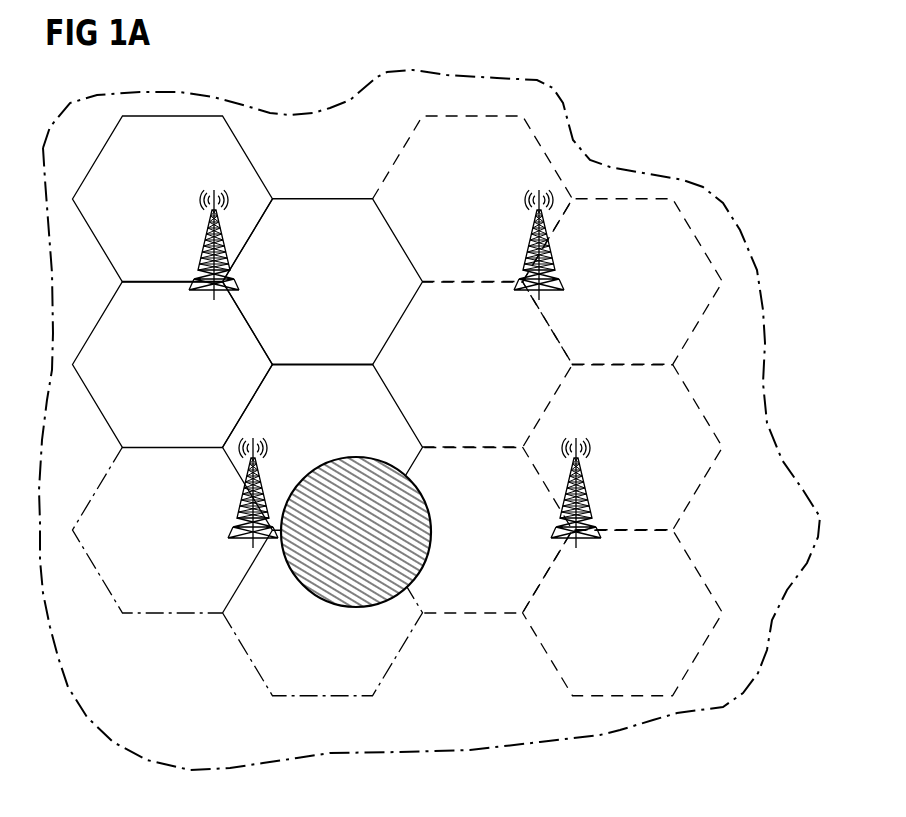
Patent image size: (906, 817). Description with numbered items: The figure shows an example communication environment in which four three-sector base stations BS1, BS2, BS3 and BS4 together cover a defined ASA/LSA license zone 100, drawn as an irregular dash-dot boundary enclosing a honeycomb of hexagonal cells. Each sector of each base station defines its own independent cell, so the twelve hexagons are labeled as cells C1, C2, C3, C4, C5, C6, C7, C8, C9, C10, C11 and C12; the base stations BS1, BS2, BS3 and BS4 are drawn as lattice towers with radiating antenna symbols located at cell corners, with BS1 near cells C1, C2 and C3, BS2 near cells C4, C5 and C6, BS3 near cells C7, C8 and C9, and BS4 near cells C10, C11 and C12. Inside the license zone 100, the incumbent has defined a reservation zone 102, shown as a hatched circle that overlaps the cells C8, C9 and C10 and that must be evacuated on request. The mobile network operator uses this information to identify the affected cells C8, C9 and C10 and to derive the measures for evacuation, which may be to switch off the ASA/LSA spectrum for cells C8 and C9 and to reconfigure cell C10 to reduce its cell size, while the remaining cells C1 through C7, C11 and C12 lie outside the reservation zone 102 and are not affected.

The ASA/LSA license zone 100 is at (430, 71).
The reservation zone 102 is at (425, 553).
The base station BS1 is at (204, 265).
The base station BS2 is at (523, 260).
The base station BS3 is at (241, 500).
The base station BS4 is at (590, 497).
The cell C1 is at (173, 199).
The cell C2 is at (323, 282).
The cell C3 is at (173, 365).
The cell C4 is at (473, 199).
The cell C5 is at (623, 282).
The cell C6 is at (498, 365).
The cell C7 is at (173, 530).
The cell C8 is at (323, 447).
The cell C9 is at (323, 613).
The cell C10 is at (498, 530).
The cell C11 is at (648, 447).
The cell C12 is at (623, 613).